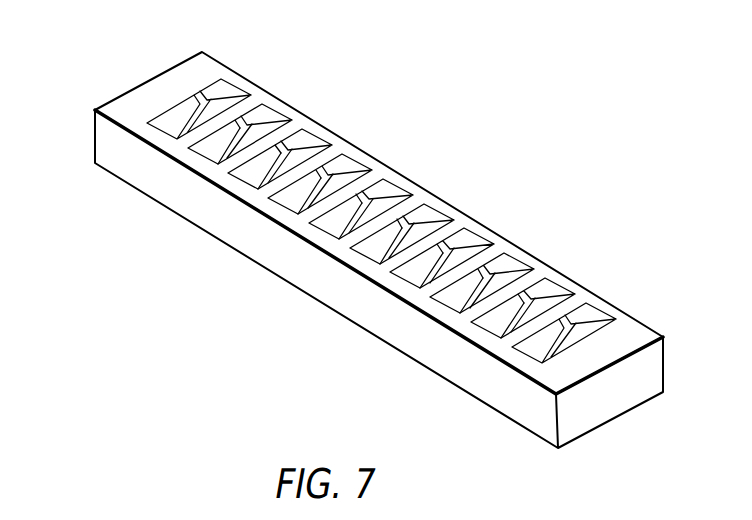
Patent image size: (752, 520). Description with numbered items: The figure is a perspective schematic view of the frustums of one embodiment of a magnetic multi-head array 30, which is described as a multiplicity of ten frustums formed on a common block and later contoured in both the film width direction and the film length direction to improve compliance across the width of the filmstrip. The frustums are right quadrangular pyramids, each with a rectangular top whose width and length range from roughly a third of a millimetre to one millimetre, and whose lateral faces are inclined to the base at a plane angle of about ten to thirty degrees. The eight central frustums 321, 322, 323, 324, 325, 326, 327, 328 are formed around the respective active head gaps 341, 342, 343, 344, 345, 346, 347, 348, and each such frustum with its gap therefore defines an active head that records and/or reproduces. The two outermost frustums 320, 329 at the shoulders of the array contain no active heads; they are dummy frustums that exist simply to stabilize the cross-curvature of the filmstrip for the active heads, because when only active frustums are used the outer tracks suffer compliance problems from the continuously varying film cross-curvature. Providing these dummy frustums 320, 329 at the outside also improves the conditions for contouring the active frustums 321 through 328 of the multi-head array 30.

The multi-head array 30 is at (524, 141).
The outermost frustum 320 is at (592, 309).
The central frustum 321 is at (552, 284).
The central frustum 322 is at (511, 259).
The central frustum 323 is at (471, 235).
The central frustum 324 is at (430, 210).
The central frustum 325 is at (390, 185).
The central frustum 326 is at (349, 160).
The central frustum 327 is at (309, 135).
The central frustum 328 is at (268, 110).
The outermost frustum 329 is at (228, 85).
The active head gap 341 is at (504, 319).
The active head gap 342 is at (464, 294).
The active head gap 343 is at (424, 269).
The active head gap 344 is at (383, 244).
The active head gap 345 is at (342, 220).
The active head gap 346 is at (302, 195).
The active head gap 347 is at (262, 170).
The active head gap 348 is at (221, 145).